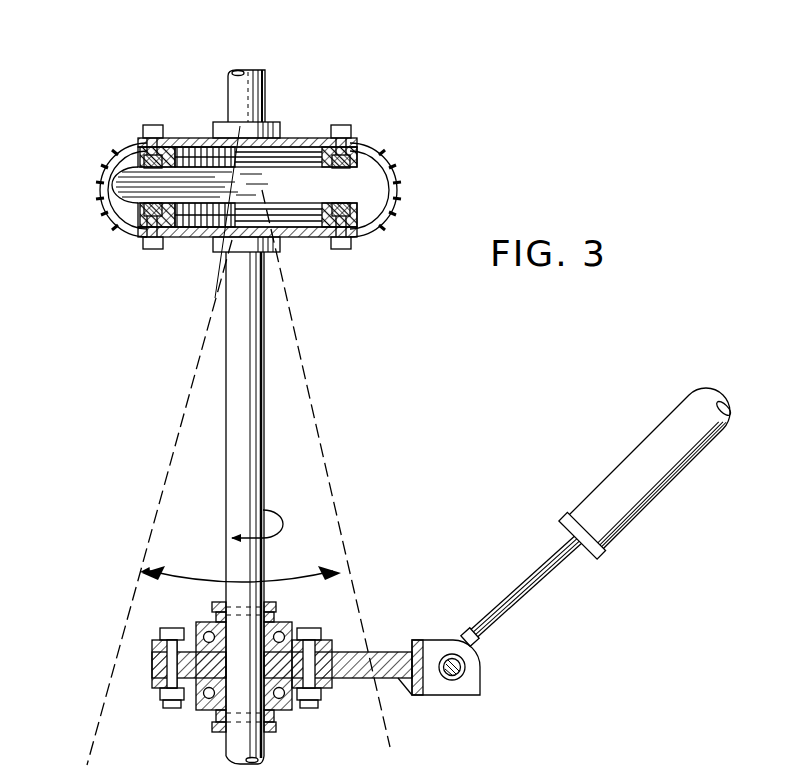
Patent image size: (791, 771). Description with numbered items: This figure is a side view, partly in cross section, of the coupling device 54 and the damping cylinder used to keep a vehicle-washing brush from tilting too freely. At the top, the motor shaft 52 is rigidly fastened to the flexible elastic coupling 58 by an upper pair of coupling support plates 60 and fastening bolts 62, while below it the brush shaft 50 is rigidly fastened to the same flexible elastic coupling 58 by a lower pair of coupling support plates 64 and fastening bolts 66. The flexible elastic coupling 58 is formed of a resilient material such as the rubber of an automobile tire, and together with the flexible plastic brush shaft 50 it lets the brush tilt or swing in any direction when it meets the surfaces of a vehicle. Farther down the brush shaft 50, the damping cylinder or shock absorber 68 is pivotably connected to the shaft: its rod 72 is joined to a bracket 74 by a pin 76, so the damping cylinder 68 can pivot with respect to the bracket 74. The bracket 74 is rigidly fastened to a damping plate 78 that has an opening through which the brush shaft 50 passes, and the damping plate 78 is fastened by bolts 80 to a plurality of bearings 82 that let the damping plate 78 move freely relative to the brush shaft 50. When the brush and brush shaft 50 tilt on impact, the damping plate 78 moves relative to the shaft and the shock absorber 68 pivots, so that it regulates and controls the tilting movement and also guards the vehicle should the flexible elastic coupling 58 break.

The brush shaft 50 is at (237, 368).
The motor shaft 52 is at (238, 88).
The coupling device 54 is at (253, 181).
The flexible elastic coupling 58 is at (105, 160).
The upper pair of coupling support plates 60 is at (313, 162).
The fastening bolts 62 is at (153, 125).
The lower pair of coupling support plates 64 is at (294, 213).
The fastening bolts 66 is at (150, 250).
The damping cylinder or shock absorber 68 is at (628, 468).
The rod 72 is at (550, 587).
The bracket 74 is at (430, 643).
The pin 76 is at (462, 670).
The damping plate 78 is at (357, 680).
The bolts 80 is at (160, 630).
The bearings 82 is at (202, 625).